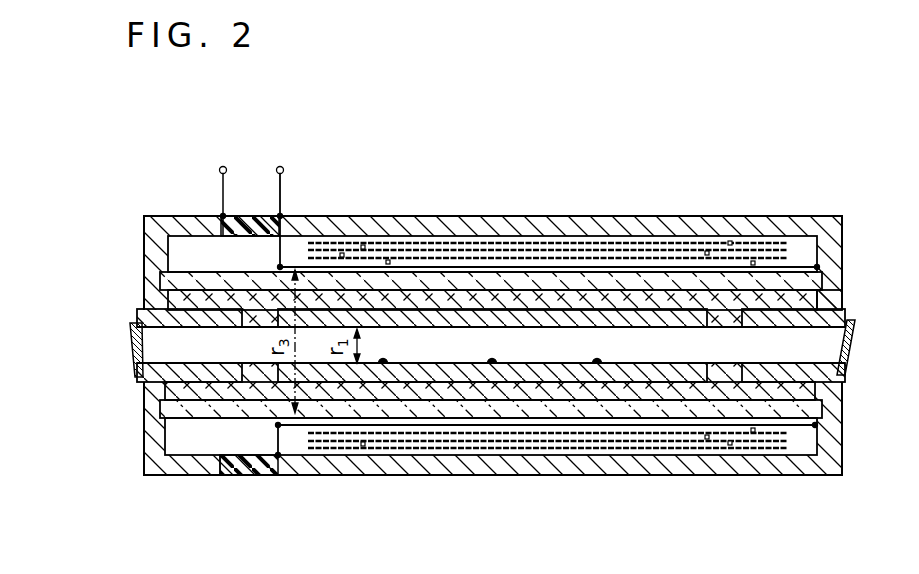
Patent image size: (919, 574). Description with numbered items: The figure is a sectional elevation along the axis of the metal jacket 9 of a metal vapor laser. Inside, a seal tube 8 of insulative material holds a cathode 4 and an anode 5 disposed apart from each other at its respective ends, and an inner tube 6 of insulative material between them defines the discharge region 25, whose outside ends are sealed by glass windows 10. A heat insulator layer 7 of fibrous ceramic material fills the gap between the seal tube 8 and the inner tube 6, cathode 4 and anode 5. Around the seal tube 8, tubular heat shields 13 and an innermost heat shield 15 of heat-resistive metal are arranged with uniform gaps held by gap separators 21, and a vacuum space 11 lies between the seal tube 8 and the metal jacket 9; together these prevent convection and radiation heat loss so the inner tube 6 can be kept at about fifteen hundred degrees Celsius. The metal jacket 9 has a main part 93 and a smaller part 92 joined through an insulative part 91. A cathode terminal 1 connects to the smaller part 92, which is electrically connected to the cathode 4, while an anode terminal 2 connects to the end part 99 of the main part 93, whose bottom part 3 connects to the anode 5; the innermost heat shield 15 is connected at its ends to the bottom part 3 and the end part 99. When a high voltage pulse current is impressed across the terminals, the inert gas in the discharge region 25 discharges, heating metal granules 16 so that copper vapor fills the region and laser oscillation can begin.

The cathode terminal 1 is at (222, 197).
The anode terminal 2 is at (282, 198).
The bottom part 3 is at (838, 268).
The cathode 4 is at (150, 392).
The anode 5 is at (826, 300).
The inner tube 6 is at (654, 316).
The heat insulator layer 7 is at (720, 310).
The seal tube 8 is at (820, 270).
The metal jacket 9 is at (830, 447).
The glass window 10 is at (132, 349).
The vacuum space 11 is at (178, 263).
The heat shield 13 is at (560, 258).
The innermost heat shield 15 is at (479, 258).
The metal granules 16 is at (597, 360).
The gap separator 21 is at (389, 261).
The discharge region 25 is at (447, 342).
The insulative part 91 is at (243, 216).
The smaller part 92 is at (162, 472).
The main part 93 is at (516, 466).
The end part 99 is at (292, 221).